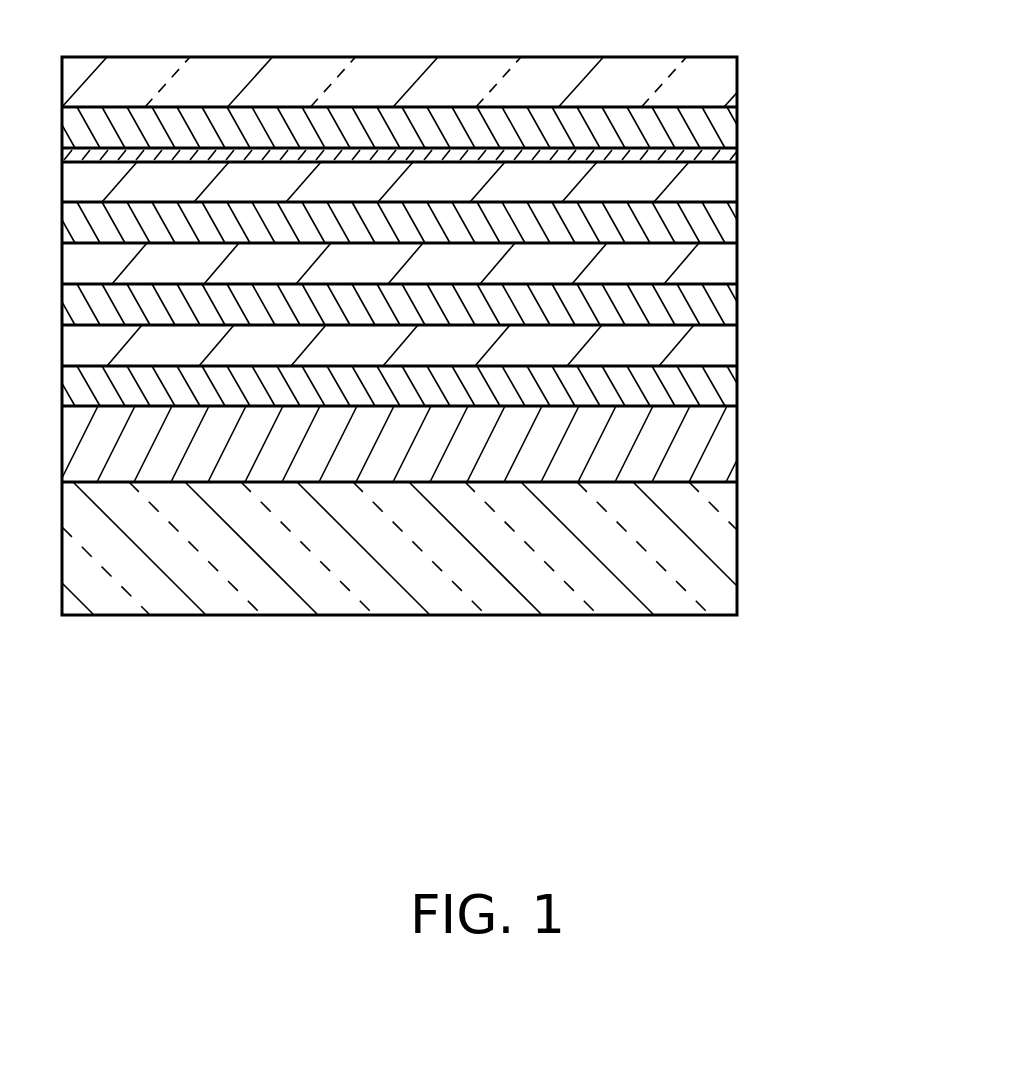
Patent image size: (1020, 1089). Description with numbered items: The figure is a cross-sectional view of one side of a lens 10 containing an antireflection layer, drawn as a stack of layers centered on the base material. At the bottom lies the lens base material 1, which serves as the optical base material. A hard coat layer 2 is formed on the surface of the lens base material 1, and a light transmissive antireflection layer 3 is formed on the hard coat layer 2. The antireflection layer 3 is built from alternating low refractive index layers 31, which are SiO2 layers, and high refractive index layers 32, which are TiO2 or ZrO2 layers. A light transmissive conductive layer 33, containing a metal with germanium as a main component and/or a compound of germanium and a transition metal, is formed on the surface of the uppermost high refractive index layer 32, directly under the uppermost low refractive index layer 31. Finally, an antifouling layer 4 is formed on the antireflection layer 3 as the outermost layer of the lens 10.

The lens 10 is at (316, 662).
The lens base material 1 is at (737, 570).
The hard coat layer 2 is at (737, 453).
The antireflection layer 3 is at (878, 63).
The low refractive index layer 31 is at (823, 422).
The high refractive index layer 32 is at (823, 365).
The conductive layer 33 is at (737, 155).
The antifouling layer 4 is at (737, 67).